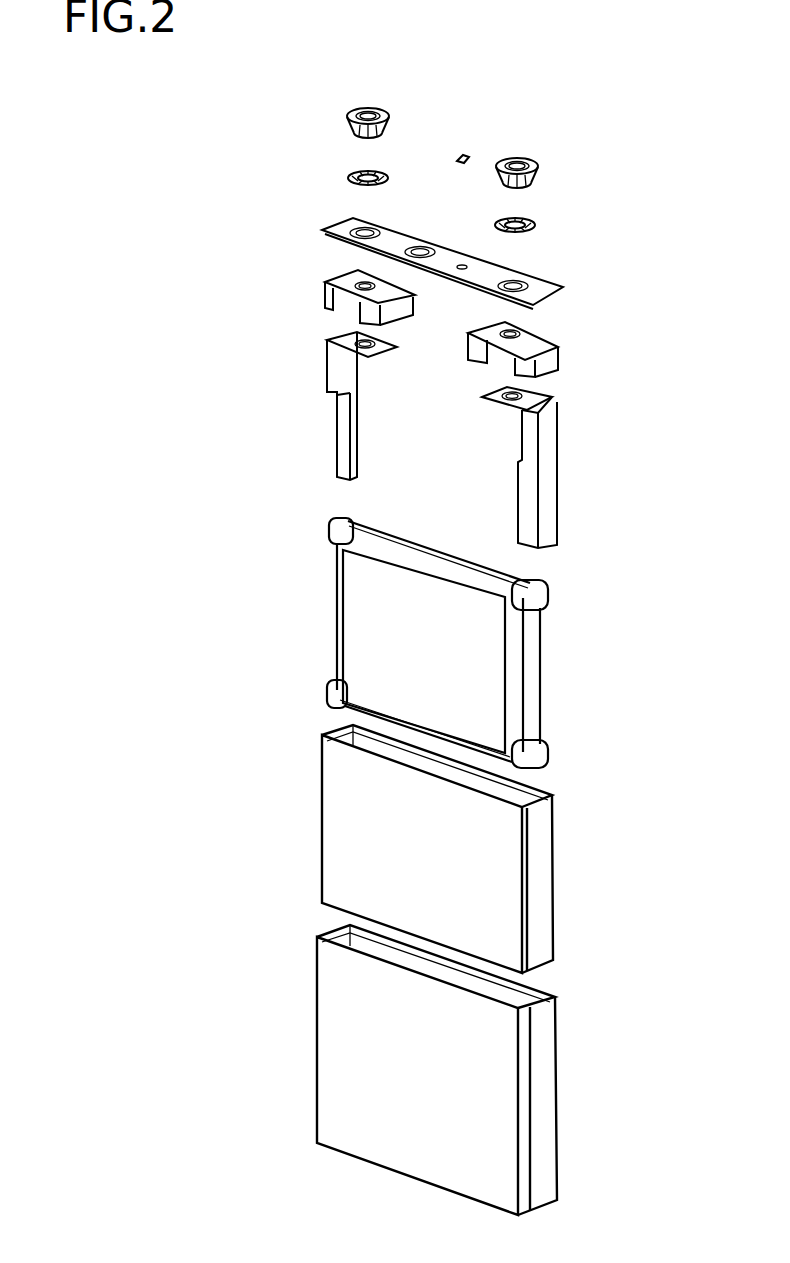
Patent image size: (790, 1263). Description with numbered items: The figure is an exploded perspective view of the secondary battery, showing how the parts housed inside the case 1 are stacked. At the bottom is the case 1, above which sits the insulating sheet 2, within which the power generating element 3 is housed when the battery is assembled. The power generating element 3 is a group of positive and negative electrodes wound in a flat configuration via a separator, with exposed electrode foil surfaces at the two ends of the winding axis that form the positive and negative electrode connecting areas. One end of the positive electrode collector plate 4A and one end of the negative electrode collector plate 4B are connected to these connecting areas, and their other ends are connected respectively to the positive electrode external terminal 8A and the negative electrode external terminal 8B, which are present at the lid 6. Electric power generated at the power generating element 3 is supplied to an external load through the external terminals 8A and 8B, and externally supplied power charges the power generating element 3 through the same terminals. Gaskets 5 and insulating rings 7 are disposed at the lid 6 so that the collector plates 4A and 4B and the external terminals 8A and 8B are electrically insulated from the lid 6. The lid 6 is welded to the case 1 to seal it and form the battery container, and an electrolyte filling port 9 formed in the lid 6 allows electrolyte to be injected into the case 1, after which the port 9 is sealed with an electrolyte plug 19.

The case 1 is at (547, 1095).
The insulating sheet 2 is at (547, 884).
The power generating element 3 is at (521, 688).
The positive electrode collector plate 4A is at (335, 433).
The negative electrode collector plate 4B is at (552, 472).
The gasket 5 is at (323, 302).
The lid 6 is at (565, 288).
The insulating ring 7 is at (347, 175).
The positive electrode external terminal 8A is at (350, 110).
The negative electrode external terminal 8B is at (533, 158).
The electrolyte filling port 9 is at (465, 265).
The electrolyte plug 19 is at (467, 157).